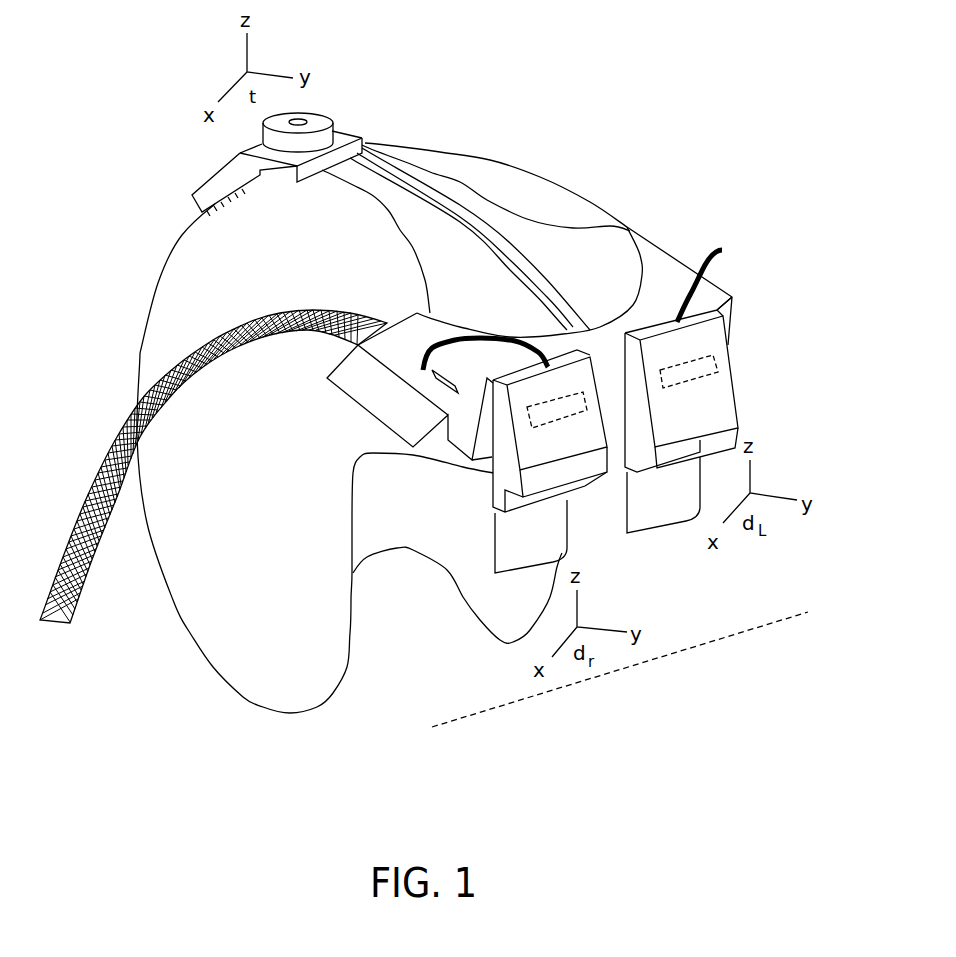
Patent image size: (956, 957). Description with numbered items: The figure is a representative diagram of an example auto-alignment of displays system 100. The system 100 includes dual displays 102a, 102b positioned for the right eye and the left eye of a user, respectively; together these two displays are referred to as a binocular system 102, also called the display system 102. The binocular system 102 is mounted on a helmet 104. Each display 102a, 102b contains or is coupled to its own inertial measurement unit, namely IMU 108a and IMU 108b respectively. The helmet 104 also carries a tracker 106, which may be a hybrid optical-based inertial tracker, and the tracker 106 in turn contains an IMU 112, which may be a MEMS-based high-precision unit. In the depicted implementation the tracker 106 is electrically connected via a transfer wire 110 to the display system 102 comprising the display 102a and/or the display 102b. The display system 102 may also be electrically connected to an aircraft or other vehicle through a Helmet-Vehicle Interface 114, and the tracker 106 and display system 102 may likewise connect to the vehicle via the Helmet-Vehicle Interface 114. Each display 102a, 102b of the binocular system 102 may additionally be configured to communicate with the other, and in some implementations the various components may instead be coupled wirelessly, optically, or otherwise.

The auto-alignment of displays system 100 is at (760, 125).
The binocular system 102 is at (621, 675).
The display 102a is at (663, 502).
The display 102b is at (533, 540).
The helmet 104 is at (160, 277).
The tracker 106 is at (327, 110).
The inertial measurement unit 108a is at (714, 356).
The inertial measurement unit 108b is at (571, 414).
The transfer wire 110 is at (414, 248).
The IMU 112 is at (367, 137).
The Helmet-Vehicle Interface 114 is at (115, 405).